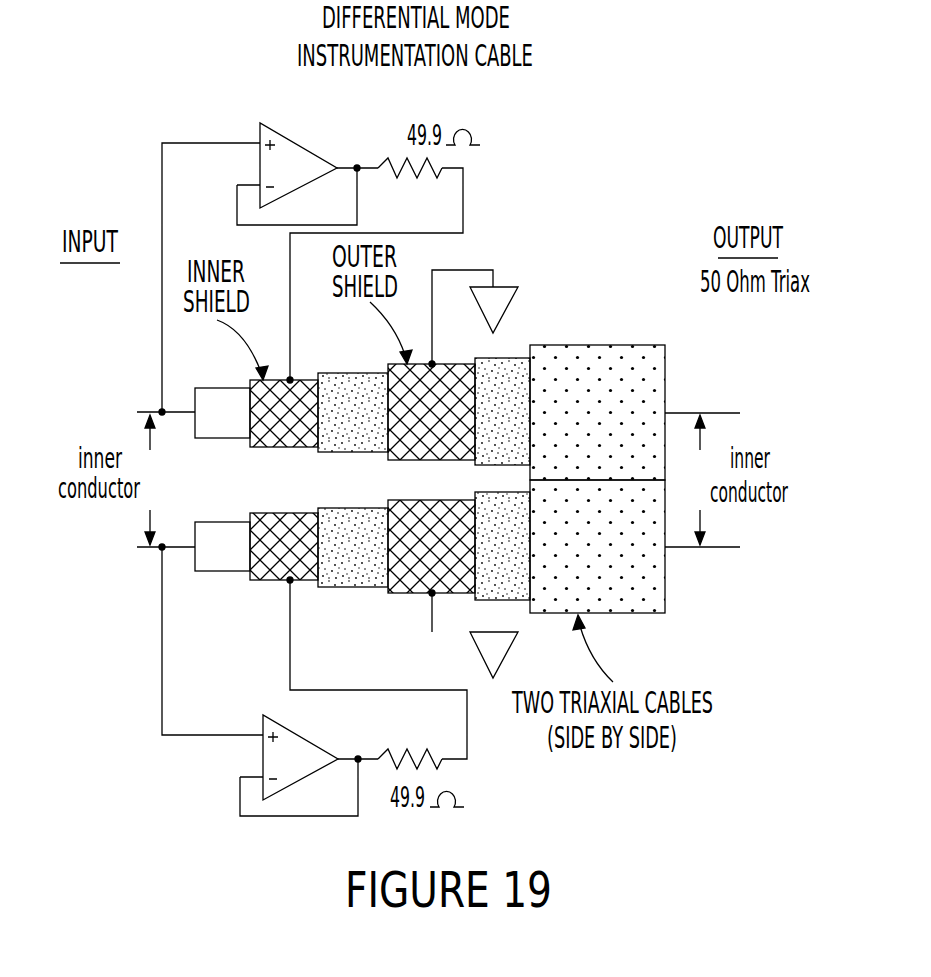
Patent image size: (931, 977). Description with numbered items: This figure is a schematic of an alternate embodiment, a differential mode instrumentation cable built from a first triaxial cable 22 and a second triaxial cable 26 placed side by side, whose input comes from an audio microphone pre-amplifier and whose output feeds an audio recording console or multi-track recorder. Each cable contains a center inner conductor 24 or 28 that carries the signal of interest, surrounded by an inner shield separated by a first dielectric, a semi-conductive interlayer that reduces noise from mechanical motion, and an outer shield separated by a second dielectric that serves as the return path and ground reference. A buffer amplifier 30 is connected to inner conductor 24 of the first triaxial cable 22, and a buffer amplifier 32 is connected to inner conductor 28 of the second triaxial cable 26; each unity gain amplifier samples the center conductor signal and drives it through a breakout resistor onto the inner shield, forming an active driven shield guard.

The first triaxial cable 22 is at (650, 365).
The inner conductor 24 is at (150, 412).
The second triaxial cable 26 is at (648, 597).
The inner conductor 28 is at (150, 548).
The buffer amplifier 30 is at (300, 145).
The buffer amplifier 32 is at (300, 737).